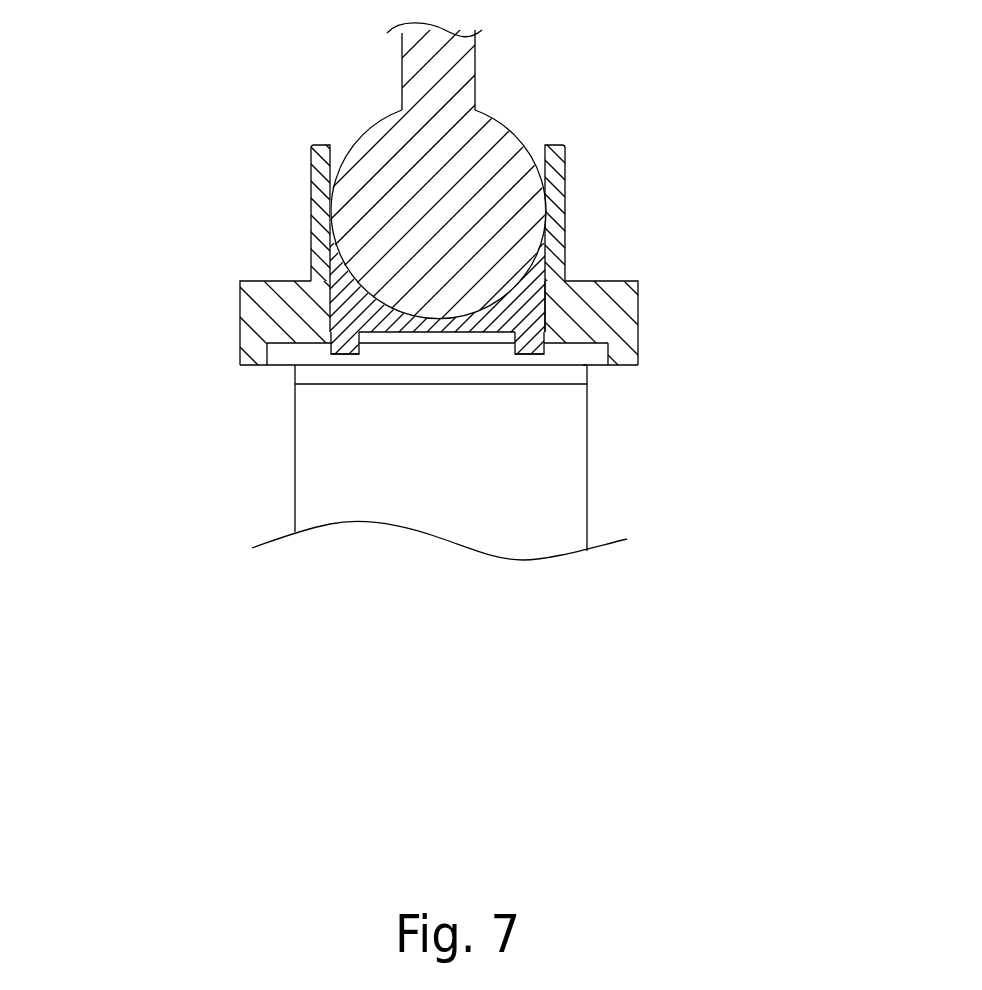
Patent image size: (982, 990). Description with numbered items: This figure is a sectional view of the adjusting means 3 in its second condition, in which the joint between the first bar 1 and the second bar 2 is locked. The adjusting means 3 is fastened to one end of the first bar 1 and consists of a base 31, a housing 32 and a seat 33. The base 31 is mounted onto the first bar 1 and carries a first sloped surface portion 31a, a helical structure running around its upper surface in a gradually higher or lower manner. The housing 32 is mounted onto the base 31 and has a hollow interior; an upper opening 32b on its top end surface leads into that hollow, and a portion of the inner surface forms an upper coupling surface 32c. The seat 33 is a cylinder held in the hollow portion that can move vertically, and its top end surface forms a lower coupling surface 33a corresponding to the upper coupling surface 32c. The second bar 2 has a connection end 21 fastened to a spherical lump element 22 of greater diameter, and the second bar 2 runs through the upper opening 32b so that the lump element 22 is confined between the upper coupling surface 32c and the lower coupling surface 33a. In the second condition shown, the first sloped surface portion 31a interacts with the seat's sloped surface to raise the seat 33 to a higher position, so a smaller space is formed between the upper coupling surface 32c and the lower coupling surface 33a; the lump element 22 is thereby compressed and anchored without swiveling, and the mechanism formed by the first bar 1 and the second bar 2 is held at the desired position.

The first bar 1 is at (612, 447).
The second bar 2 is at (355, 76).
The connection end 21 is at (445, 82).
The lump element 22 is at (498, 167).
The adjusting means 3 is at (78, 145).
The base 31 is at (260, 358).
The first sloped surface portion 31a is at (343, 352).
The housing 32 is at (275, 289).
The upper opening 32b is at (540, 350).
The upper coupling surface 32c is at (335, 202).
The seat 33 is at (325, 270).
The lower coupling surface 33a is at (522, 284).